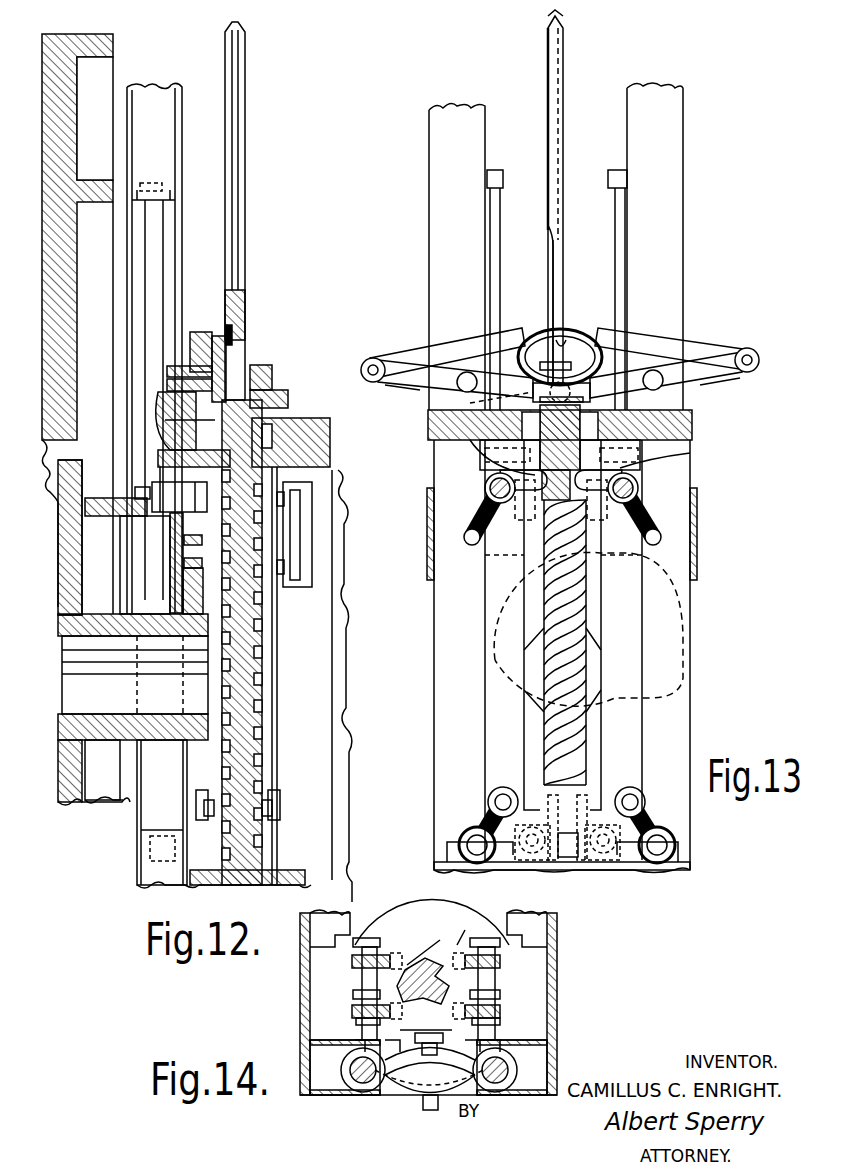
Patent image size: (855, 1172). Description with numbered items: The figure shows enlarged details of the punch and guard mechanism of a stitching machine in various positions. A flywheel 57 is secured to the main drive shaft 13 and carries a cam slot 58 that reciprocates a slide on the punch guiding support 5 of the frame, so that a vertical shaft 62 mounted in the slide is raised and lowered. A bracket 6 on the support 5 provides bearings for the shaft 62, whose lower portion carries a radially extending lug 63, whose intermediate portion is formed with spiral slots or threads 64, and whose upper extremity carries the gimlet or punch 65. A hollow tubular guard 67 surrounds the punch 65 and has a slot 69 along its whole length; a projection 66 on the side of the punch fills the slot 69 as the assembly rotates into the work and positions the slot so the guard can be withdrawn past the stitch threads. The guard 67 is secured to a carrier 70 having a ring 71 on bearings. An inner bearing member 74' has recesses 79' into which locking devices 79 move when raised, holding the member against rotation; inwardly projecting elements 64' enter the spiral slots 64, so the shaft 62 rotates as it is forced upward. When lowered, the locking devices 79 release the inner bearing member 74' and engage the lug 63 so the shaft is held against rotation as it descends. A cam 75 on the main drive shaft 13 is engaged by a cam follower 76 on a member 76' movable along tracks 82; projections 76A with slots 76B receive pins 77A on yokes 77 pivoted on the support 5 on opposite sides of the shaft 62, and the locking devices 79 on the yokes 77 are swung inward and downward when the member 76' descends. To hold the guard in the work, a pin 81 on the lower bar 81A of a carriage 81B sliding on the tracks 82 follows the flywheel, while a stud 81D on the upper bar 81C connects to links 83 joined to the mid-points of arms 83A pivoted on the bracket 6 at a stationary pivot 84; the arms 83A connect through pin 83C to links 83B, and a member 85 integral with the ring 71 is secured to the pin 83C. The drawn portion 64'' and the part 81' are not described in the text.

In FIG. 12, the punch guiding support 5 is at (160, 150).
In FIG. 13, the punch guiding support 5 is at (440, 160).
In FIG. 14, the punch guiding support 5 is at (310, 1056).
In FIG. 12, the bracket 6 is at (192, 446).
In FIG. 13, the bracket 6 is at (694, 426).
In FIG. 14, the bracket 6 is at (548, 972).
In FIG. 12, the main drive shaft 13 is at (70, 664).
In FIG. 13, the main drive shaft 13 is at (590, 672).
In FIG. 12, the flywheel 57 is at (70, 282).
In FIG. 12, the cam slot 58 is at (94, 60).
In FIG. 12, the vertical shaft 62 is at (240, 886).
In FIG. 13, the radially extending lug 63 is at (570, 858).
In FIG. 12, the spiral slots or threads 64 is at (268, 642).
In FIG. 13, the spiral slots or threads 64 is at (612, 642).
In FIG. 14, the spiral slots or threads 64 is at (423, 989).
In FIG. 13, the inwardly projecting elements 64' is at (639, 452).
In FIG. 14, the screw shaft section 64'' is at (446, 955).
In FIG. 12, the gimlet or punch 65 is at (240, 276).
In FIG. 13, the gimlet or punch 65 is at (565, 22).
In FIG. 12, the projection 66 is at (240, 176).
In FIG. 13, the projection 66 is at (548, 268).
In FIG. 12, the hollow tubular guard 67 is at (245, 66).
In FIG. 13, the hollow tubular guard 67 is at (562, 148).
In FIG. 13, the slot 69 is at (548, 126).
In FIG. 12, the carrier 70 is at (262, 380).
In FIG. 12, the ring 71 is at (270, 396).
In FIG. 12, the inner bearing member 74' is at (291, 431).
In FIG. 13, the inner bearing member 74' is at (539, 455).
In FIG. 14, the inner bearing member 74' is at (432, 917).
In FIG. 12, the cam 75 is at (196, 756).
In FIG. 13, the cam 75 is at (492, 634).
In FIG. 12, the cam follower 76 is at (176, 574).
In FIG. 14, the cam follower 76 is at (443, 995).
In FIG. 12, the member 76' is at (127, 565).
In FIG. 13, the member 76' is at (543, 650).
In FIG. 14, the member 76' is at (450, 1070).
In FIG. 12, the projections 76A is at (195, 476).
In FIG. 13, the projections 76A is at (488, 478).
In FIG. 14, the projections 76A is at (365, 1042).
In FIG. 13, the slots 76B is at (576, 517).
In FIG. 12, the yokes 77 is at (300, 530).
In FIG. 13, the yokes 77 is at (636, 500).
In FIG. 14, the yokes 77 is at (362, 978).
In FIG. 12, the pins 77A is at (170, 540).
In FIG. 13, the pins 77A is at (486, 490).
In FIG. 14, the pins 77A is at (500, 1020).
In FIG. 12, the locking devices 79 is at (308, 676).
In FIG. 13, the locking devices 79 is at (588, 625).
In FIG. 14, the locking devices 79 is at (427, 981).
In FIG. 13, the recesses 79' is at (606, 457).
In FIG. 14, the recesses 79' is at (436, 937).
In FIG. 14, the pin 81 is at (439, 1117).
In FIG. 12, the retaining block 81' is at (116, 522).
In FIG. 12, the lower bar 81A is at (140, 483).
In FIG. 14, the lower bar 81A is at (420, 1060).
In FIG. 12, the carriage 81B is at (158, 423).
In FIG. 12, the upper bar 81C is at (167, 386).
In FIG. 12, the stud 81D is at (167, 372).
In FIG. 13, the stud 81D is at (587, 388).
In FIG. 12, the tracks 82 is at (158, 298).
In FIG. 13, the tracks 82 is at (626, 232).
In FIG. 14, the tracks 82 is at (500, 1070).
In FIG. 13, the links 83 is at (482, 374).
In FIG. 13, the arms 83A is at (418, 386).
In FIG. 12, the links 83B is at (202, 340).
In FIG. 13, the links 83B is at (405, 362).
In FIG. 12, the pin 83C is at (238, 330).
In FIG. 13, the pin 83C is at (565, 332).
In FIG. 12, the stationary pivot 84 is at (150, 422).
In FIG. 13, the stationary pivot 84 is at (470, 398).
In FIG. 12, the member 85 is at (226, 366).
In FIG. 13, the member 85 is at (540, 345).